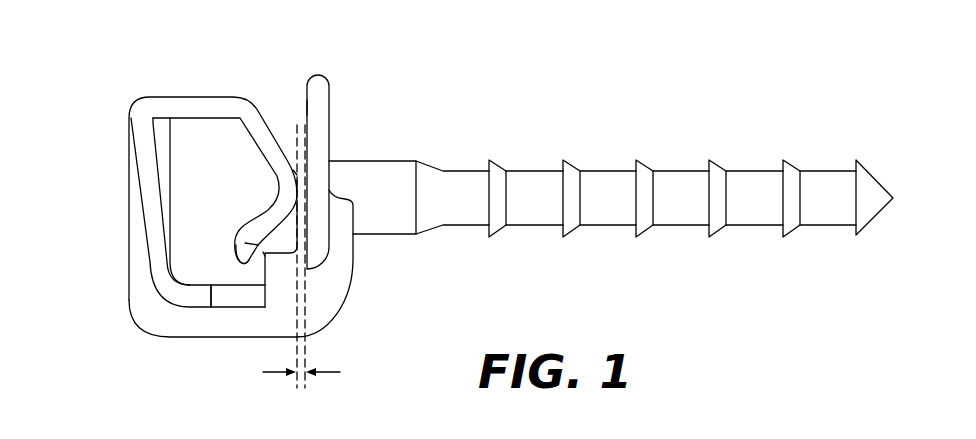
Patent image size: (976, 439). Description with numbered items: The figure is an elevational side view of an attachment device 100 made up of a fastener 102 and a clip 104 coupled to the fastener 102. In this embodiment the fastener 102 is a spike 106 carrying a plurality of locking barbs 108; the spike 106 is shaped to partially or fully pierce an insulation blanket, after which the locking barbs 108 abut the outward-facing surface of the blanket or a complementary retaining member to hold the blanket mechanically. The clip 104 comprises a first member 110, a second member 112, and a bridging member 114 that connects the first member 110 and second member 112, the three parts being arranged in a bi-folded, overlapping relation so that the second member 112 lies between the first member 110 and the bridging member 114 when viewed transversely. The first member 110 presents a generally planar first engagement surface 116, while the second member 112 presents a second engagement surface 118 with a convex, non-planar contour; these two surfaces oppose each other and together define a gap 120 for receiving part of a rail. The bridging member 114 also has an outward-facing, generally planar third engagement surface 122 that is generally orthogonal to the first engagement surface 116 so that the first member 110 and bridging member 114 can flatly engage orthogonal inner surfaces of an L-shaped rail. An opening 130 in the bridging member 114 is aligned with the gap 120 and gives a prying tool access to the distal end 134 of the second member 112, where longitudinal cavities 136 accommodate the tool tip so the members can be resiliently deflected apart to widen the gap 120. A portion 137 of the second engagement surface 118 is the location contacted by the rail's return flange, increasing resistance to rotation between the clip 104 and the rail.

The attachment device 100 is at (690, 45).
The fastener 102 is at (409, 150).
The clip 104 is at (118, 193).
The spike 106 is at (753, 168).
The locking barbs 108 is at (643, 217).
The first member 110 is at (318, 82).
The second member 112 is at (260, 136).
The bridging member 114 is at (158, 250).
The first engagement surface 116 is at (304, 190).
The second engagement surface 118 is at (293, 170).
The gap 120 is at (306, 107).
The third engagement surface 122 is at (143, 95).
The opening 130 is at (213, 292).
The distal end 134 is at (242, 262).
The longitudinal cavities 136 is at (245, 243).
The portion 137 is at (263, 252).